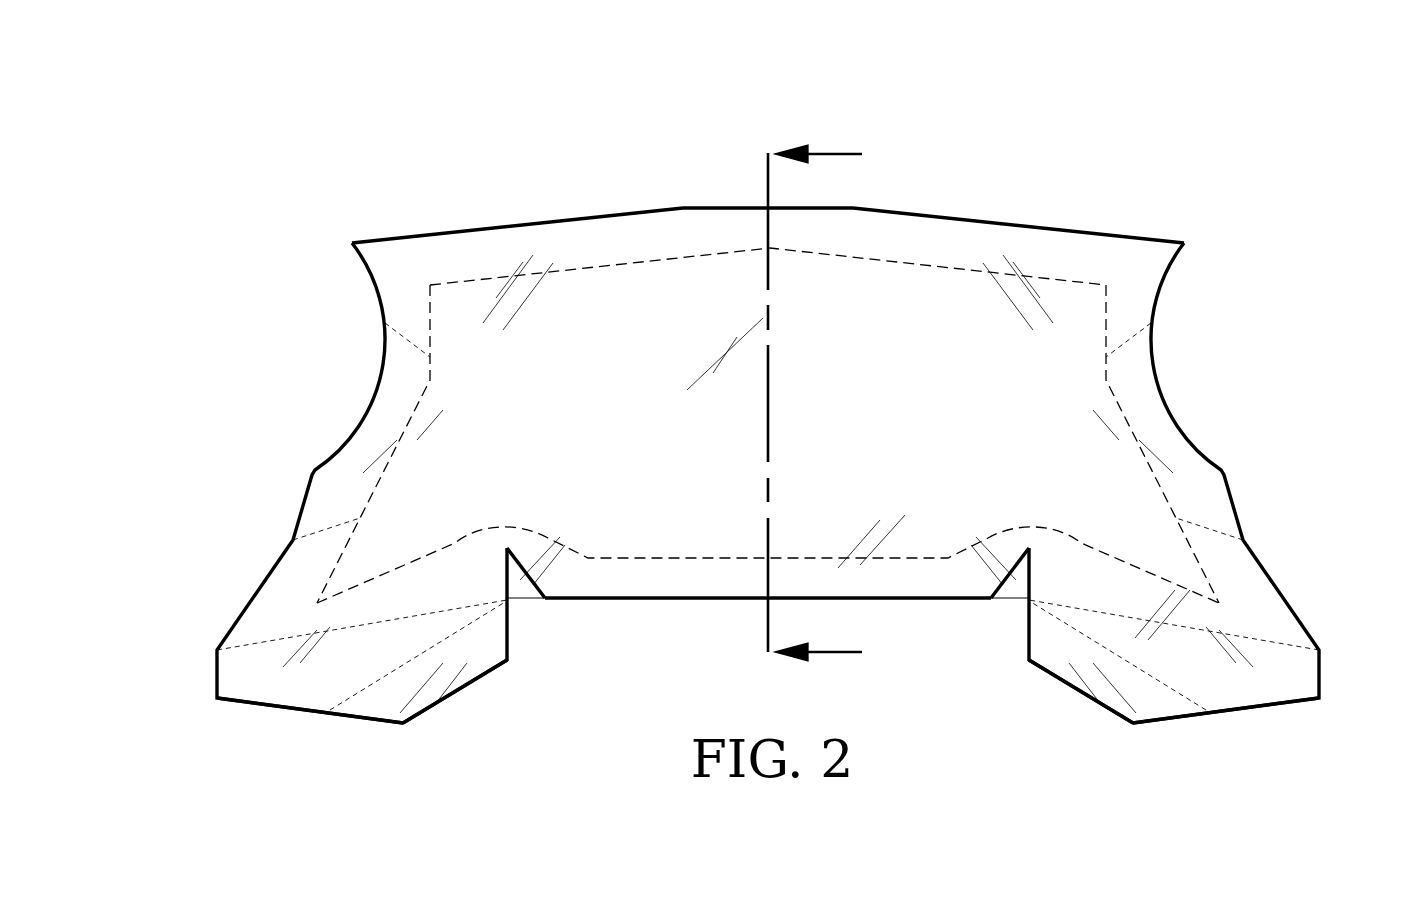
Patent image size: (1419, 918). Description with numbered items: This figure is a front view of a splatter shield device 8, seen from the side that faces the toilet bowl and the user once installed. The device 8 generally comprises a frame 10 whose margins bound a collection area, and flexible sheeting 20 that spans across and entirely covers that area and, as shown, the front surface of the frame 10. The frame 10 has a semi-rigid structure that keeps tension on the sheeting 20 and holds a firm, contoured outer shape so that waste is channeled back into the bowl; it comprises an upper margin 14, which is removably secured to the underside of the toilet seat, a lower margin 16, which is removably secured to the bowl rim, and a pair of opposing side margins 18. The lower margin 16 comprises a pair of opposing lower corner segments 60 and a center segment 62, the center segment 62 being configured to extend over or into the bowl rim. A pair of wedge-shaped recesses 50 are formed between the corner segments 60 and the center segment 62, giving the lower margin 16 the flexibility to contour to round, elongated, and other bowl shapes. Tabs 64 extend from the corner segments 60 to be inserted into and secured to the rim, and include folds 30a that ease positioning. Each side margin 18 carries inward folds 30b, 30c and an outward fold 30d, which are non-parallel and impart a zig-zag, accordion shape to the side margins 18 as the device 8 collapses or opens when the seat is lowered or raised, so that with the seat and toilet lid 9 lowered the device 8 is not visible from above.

The splatter shield device 8 is at (317, 137).
The frame 10 is at (1012, 220).
The upper margin 14 is at (920, 237).
The flexible sheeting 20 is at (663, 325).
The side margins 18 is at (370, 445).
The center segment 62 is at (702, 575).
The lower margin 16 is at (866, 608).
The recesses 50 is at (529, 625).
The inward fold 30b is at (404, 330).
The outward fold 30d is at (317, 532).
The inward fold 30c is at (250, 637).
The folds 30a is at (357, 688).
The tabs 64 is at (457, 657).
The lower corner segments 60 is at (268, 677).
The toilet lid 9 is at (798, 404).